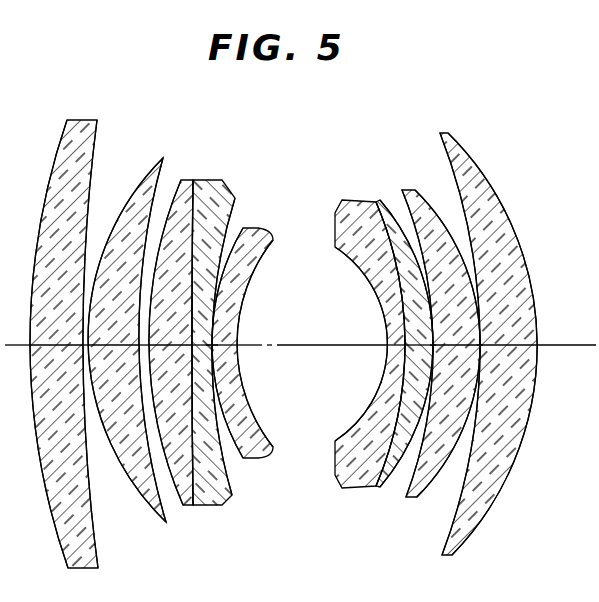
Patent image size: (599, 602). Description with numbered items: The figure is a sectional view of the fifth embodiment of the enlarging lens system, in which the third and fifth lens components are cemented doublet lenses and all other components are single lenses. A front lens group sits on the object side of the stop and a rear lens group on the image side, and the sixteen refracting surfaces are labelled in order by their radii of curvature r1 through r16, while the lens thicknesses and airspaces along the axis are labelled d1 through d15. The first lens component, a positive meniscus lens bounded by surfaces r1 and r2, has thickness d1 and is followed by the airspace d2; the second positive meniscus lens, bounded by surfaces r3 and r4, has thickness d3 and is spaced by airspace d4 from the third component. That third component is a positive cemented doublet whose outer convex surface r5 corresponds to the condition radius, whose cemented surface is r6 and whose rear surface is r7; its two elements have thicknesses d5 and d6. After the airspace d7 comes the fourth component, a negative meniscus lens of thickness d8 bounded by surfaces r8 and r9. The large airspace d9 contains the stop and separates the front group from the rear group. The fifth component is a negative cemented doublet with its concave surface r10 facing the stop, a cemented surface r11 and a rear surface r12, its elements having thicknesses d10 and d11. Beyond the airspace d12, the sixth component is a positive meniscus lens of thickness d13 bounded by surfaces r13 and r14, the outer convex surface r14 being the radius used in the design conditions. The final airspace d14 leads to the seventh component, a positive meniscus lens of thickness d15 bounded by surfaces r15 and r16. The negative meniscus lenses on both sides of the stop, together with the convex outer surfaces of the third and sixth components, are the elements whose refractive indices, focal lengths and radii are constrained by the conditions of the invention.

The thickness of first lens d1 is at (50, 343).
The airspace between first and second lenses d2 is at (84, 352).
The thickness of second lens d3 is at (111, 343).
The airspace between second and third lenses d4 is at (132, 348).
The thickness of first element of third lens component d5 is at (166, 343).
The thickness of second element of third lens component d6 is at (194, 348).
The airspace between third and fourth lenses d7 is at (204, 324).
The thickness of fourth lens d8 is at (232, 342).
The airspace between front and rear lens groups d9 is at (308, 343).
The thickness of first element of fifth lens component d10 is at (388, 337).
The thickness of second element of fifth lens component d11 is at (398, 356).
The airspace between fifth and sixth lenses d12 is at (436, 352).
The thickness of sixth lens d13 is at (458, 338).
The airspace between sixth and seventh lenses d14 is at (483, 347).
The thickness of seventh lens d15 is at (497, 340).
The radius of curvature of first surface r1 is at (60, 543).
The radius of curvature of second surface r2 is at (97, 547).
The radius of curvature of third surface r3 is at (133, 493).
The radius of curvature of fourth surface r4 is at (172, 520).
The radius of curvature of fifth surface r5 is at (180, 503).
The radius of curvature of sixth surface r6 is at (212, 507).
The radius of curvature of seventh surface r7 is at (238, 468).
The radius of curvature of eighth surface r8 is at (244, 462).
The radius of curvature of ninth surface r9 is at (273, 441).
The radius of curvature of tenth surface r10 is at (340, 438).
The radius of curvature of eleventh surface r11 is at (373, 476).
The radius of curvature of twelfth surface r12 is at (381, 484).
The radius of curvature of thirteenth surface r13 is at (406, 498).
The radius of curvature of fourteenth surface r14 is at (428, 488).
The radius of curvature of fifteenth surface r15 is at (442, 536).
The radius of curvature of sixteenth surface r16 is at (468, 531).